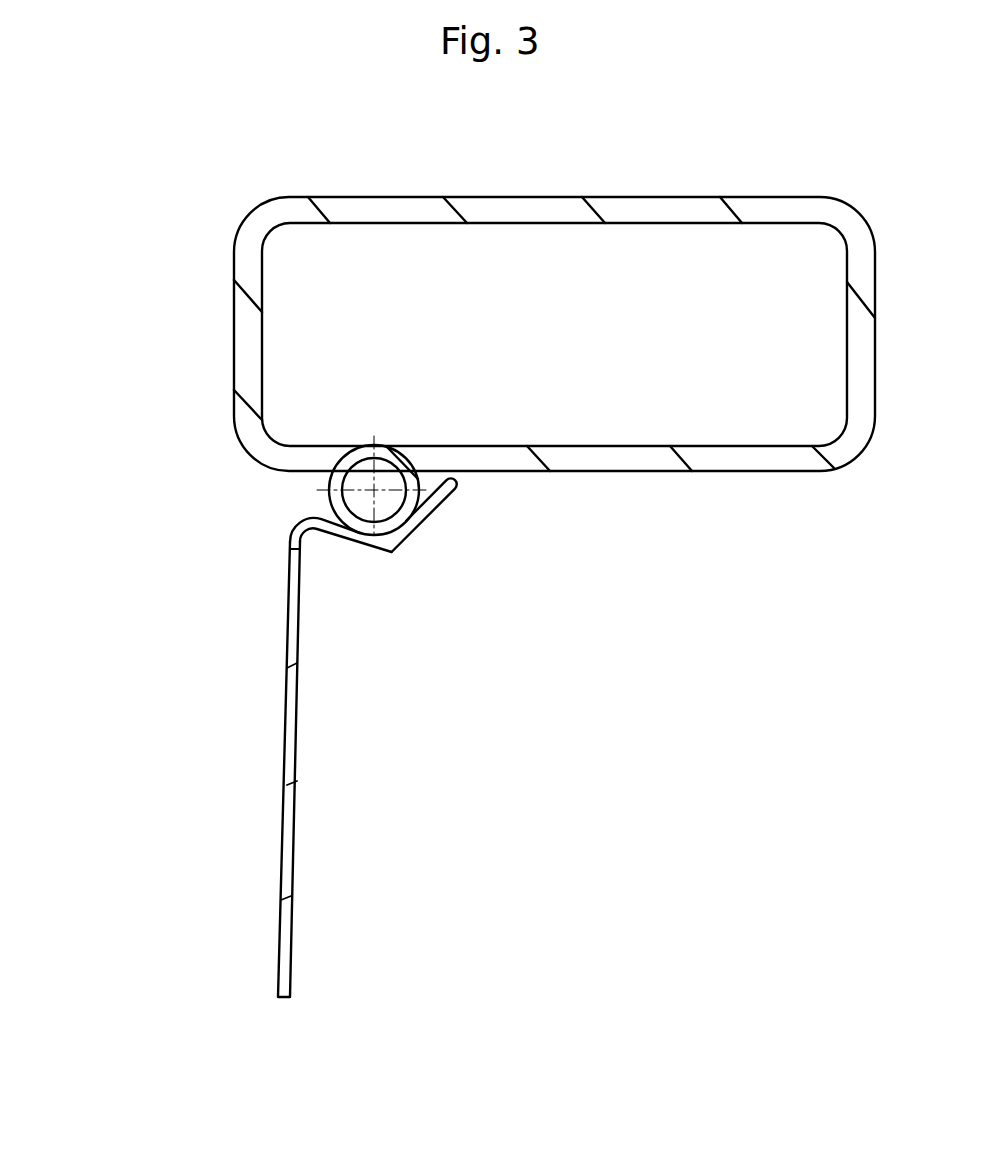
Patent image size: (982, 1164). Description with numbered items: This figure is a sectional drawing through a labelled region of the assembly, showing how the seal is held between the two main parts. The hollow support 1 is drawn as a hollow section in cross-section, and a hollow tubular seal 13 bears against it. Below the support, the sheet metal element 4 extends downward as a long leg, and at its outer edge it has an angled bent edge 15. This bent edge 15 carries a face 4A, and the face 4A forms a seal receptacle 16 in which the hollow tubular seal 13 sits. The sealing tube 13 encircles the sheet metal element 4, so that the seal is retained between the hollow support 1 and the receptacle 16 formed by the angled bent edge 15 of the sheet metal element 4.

The hollow support 1 is at (683, 207).
The sheet metal element 4 is at (288, 752).
The face 4A is at (286, 653).
The hollow tubular seal 13 is at (329, 503).
The angled bent edge 15 is at (377, 550).
The seal receptacle 16 is at (475, 515).